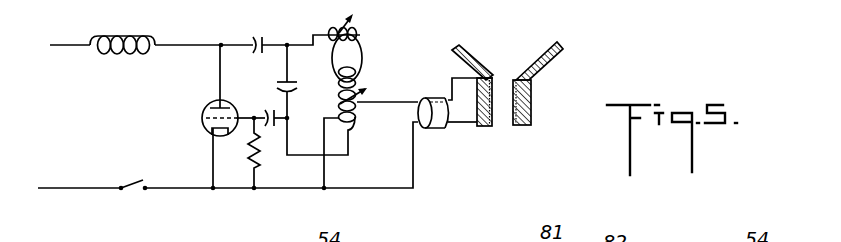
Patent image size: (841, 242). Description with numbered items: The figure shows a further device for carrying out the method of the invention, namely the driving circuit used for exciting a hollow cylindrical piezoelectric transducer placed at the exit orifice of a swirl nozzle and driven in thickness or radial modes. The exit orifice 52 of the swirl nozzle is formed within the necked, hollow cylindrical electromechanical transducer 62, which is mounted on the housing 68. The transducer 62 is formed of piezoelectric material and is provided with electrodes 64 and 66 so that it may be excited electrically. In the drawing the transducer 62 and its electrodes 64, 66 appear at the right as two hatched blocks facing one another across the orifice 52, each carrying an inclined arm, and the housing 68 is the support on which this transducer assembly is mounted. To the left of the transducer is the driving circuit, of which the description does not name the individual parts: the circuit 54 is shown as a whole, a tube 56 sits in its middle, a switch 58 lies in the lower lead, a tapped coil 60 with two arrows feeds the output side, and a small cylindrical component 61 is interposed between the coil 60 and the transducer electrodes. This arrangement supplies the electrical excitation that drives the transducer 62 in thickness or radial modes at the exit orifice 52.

The exit orifice 52 is at (499, 112).
The oscillator circuit 54 is at (228, 125).
The vacuum tube 56 is at (205, 101).
The switch 58 is at (137, 192).
The coil / transformer 60 is at (358, 78).
The condenser 61 is at (438, 112).
The electromechanical transducer 62 is at (532, 88).
The electrode 64 is at (532, 118).
The electrode 66 is at (559, 88).
The housing 68 is at (531, 63).